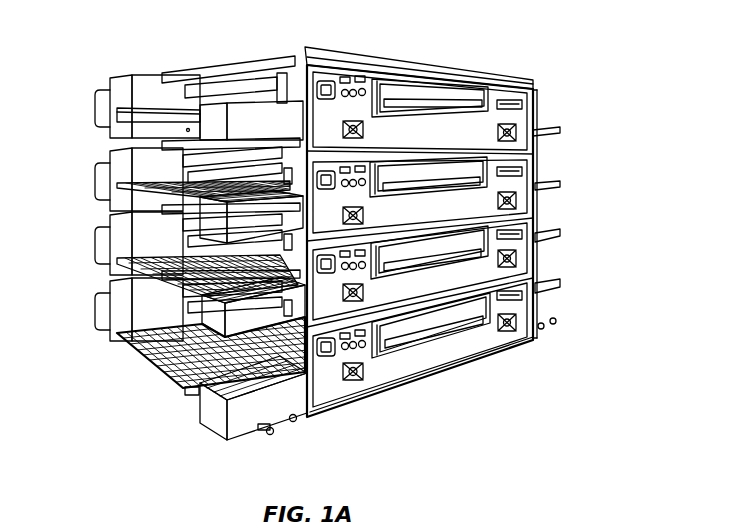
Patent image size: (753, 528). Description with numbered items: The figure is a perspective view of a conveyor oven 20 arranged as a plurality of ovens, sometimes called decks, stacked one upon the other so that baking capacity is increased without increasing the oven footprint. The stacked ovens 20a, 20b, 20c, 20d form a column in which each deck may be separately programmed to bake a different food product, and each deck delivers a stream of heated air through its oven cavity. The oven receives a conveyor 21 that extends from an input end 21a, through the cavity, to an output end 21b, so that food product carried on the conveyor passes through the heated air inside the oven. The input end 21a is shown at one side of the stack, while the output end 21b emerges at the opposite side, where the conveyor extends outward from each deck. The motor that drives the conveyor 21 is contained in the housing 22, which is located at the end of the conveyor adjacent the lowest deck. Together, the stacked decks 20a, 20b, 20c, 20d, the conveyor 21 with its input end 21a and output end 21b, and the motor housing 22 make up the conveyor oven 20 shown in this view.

The conveyor oven 20 is at (414, 31).
The oven deck 20a is at (520, 124).
The oven deck 20b is at (520, 193).
The oven unit 20c is at (520, 248).
The oven unit 20d is at (520, 303).
The conveyor 21 is at (142, 360).
The input end 21a is at (545, 183).
The output end 21b is at (110, 193).
The housing 22 is at (243, 423).